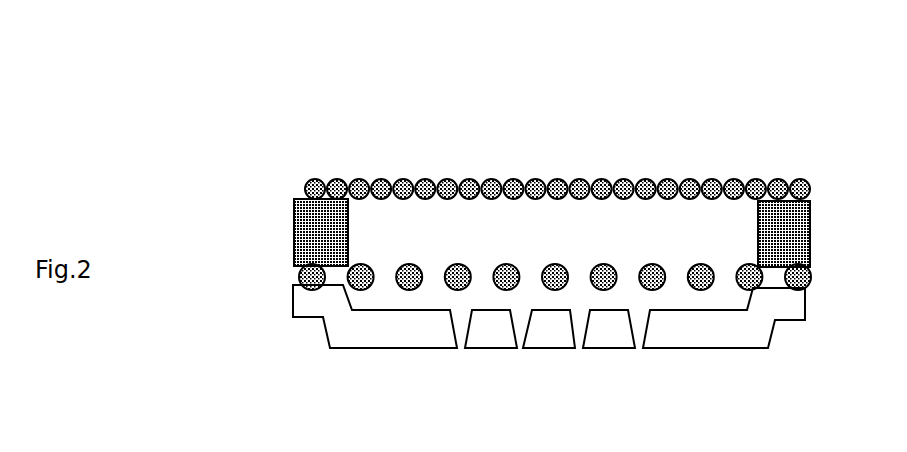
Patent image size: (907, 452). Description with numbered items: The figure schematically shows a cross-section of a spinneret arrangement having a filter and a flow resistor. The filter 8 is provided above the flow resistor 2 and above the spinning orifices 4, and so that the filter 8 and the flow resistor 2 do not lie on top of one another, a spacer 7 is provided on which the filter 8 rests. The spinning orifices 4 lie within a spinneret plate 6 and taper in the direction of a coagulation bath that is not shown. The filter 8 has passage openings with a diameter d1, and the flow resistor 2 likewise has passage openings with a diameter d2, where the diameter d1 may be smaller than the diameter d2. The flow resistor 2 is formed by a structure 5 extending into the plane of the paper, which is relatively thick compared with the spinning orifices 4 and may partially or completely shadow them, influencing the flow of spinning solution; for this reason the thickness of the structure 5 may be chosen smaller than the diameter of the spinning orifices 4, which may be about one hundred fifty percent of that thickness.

The flow resistor 2 is at (808, 286).
The spinning orifices 4 is at (462, 352).
The structure 5 is at (583, 218).
The spinneret plate 6 is at (697, 336).
The spacer 7 is at (792, 227).
The filter 8 is at (803, 189).
The diameter of the filter passage openings d1 is at (503, 190).
The diameter of the flow resistor passage openings d2 is at (520, 276).